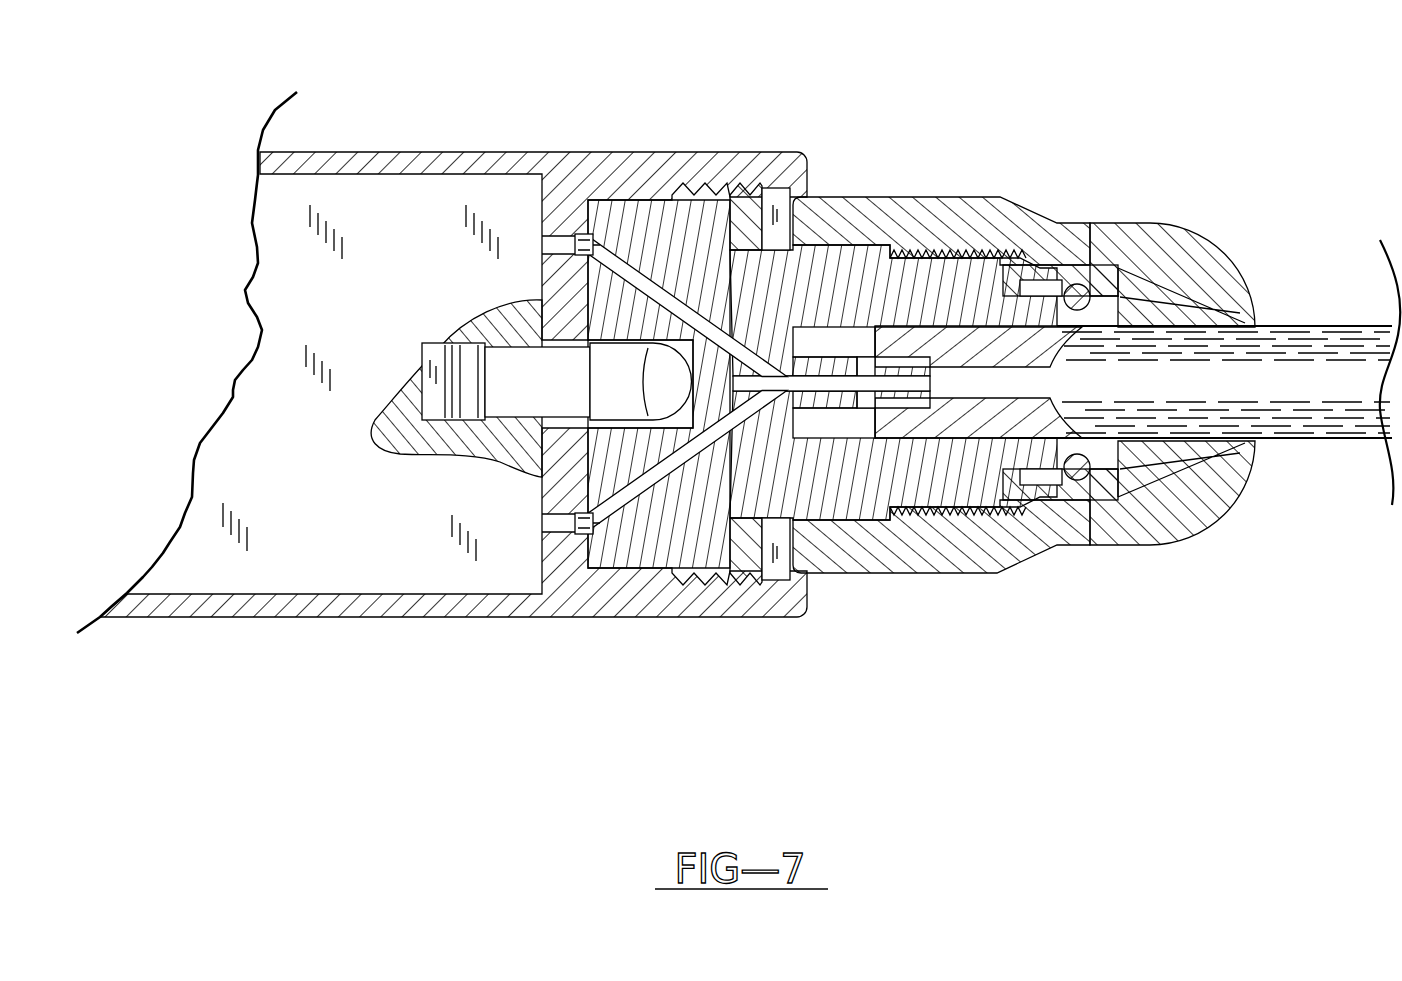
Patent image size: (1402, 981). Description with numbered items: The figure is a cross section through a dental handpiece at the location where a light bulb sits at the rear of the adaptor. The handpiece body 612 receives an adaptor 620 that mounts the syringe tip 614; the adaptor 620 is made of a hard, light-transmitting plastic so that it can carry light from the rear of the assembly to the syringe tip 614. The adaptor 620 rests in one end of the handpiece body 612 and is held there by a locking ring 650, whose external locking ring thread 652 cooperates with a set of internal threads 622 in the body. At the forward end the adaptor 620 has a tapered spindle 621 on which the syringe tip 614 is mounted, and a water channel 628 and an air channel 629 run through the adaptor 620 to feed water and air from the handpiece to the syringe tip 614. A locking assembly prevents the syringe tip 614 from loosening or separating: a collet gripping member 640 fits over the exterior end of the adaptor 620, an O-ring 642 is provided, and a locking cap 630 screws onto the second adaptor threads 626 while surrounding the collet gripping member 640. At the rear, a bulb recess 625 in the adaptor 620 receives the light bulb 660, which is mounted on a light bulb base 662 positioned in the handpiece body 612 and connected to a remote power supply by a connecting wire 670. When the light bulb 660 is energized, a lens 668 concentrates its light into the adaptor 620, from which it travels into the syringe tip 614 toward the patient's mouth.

The handpiece body 612 is at (569, 172).
The syringe tip 614 is at (1295, 380).
The adaptor 620 is at (823, 492).
The tapered spindle 621 is at (997, 573).
The internal threads 622 is at (690, 185).
The bulb recess 625 is at (595, 342).
The second adaptor threads 626 is at (957, 258).
The water channel 628 is at (703, 235).
The air channel 629 is at (677, 485).
The locking cap 630 is at (1177, 522).
The collet gripping member 640 is at (1200, 312).
The O-ring 642 is at (1079, 285).
The locking ring 650 is at (803, 196).
The locking ring thread 652 is at (763, 618).
The light bulb 660 is at (572, 398).
The light bulb base 662 is at (467, 408).
The lens 668 is at (662, 422).
The connecting wire 670 is at (407, 395).